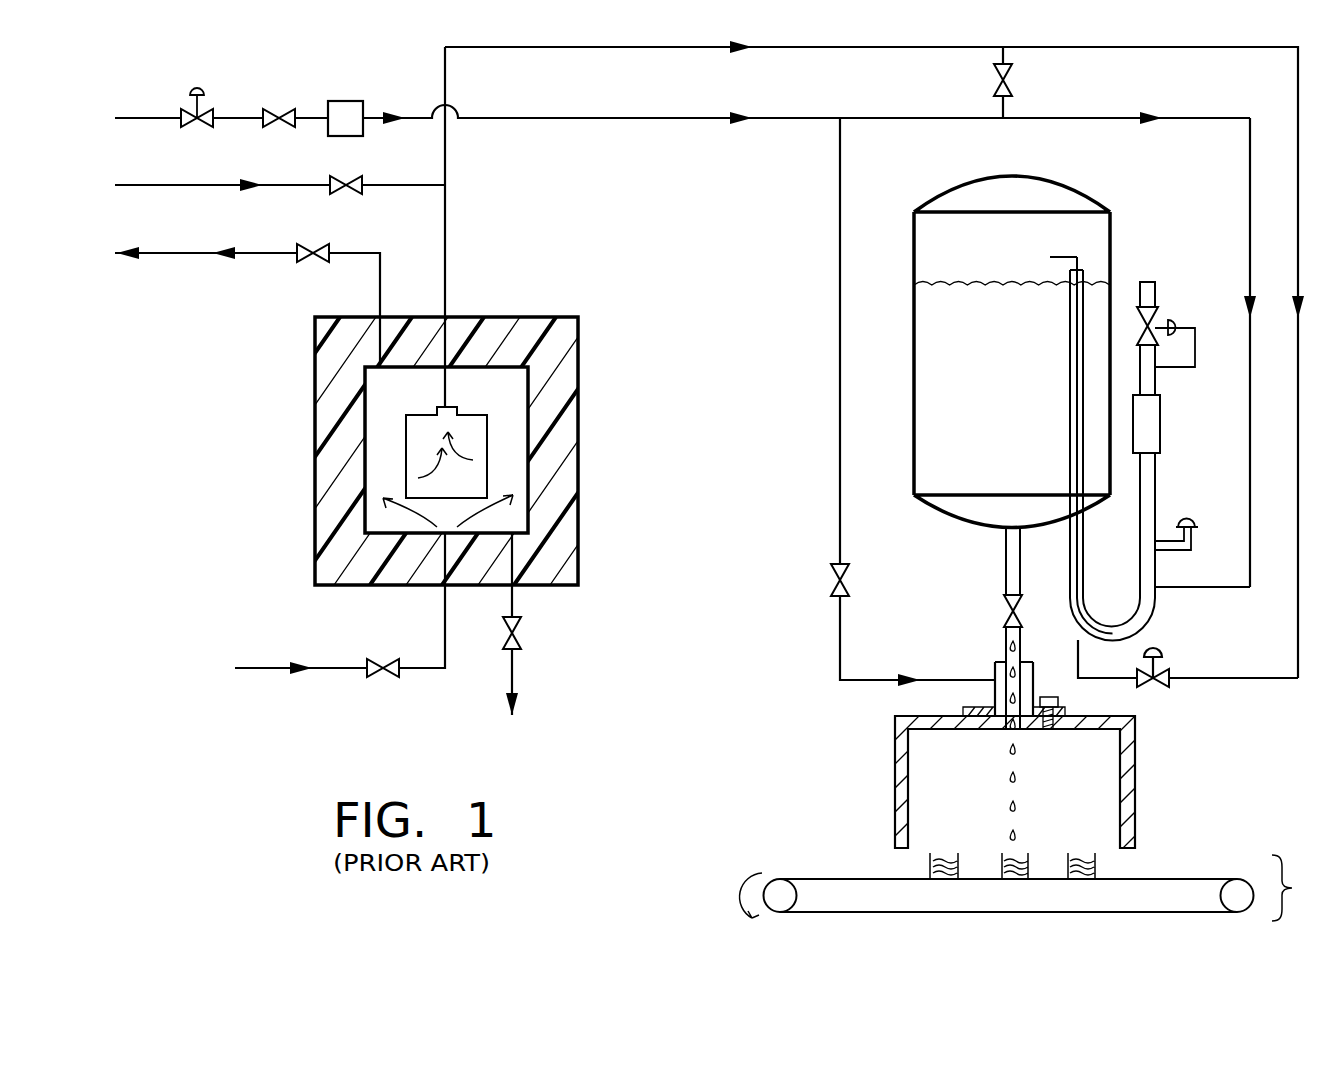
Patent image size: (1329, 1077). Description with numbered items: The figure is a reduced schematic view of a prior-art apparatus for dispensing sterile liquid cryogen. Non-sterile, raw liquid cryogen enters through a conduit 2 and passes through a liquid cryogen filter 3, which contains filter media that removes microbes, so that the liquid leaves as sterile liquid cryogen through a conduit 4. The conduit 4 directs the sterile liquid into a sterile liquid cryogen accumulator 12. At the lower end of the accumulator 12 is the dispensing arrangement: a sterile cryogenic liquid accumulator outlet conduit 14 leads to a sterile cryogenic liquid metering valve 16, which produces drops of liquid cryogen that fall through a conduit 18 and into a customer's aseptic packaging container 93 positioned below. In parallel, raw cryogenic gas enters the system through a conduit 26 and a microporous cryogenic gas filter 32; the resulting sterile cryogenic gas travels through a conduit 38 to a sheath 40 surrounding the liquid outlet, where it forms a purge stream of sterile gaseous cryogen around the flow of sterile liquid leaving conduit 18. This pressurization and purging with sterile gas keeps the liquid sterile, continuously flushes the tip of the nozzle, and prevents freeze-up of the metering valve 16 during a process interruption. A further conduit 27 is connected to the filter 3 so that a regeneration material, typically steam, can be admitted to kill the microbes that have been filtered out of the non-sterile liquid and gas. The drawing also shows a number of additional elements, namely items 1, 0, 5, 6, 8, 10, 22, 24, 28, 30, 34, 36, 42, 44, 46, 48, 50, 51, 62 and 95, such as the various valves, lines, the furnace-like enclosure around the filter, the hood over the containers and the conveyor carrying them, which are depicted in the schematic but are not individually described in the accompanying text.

The apparatus / conveyor assembly 1 is at (1296, 888).
The crucible 0 is at (407, 450).
The conduit 2 is at (255, 668).
The liquid cryogen filter 3 is at (530, 467).
The conduit 4 is at (447, 290).
The outlet valve 5 is at (517, 630).
The gas line 6 is at (891, 48).
The drain valve 8 is at (1172, 676).
The bolt / fastener 10 is at (1077, 652).
The sterile liquid cryogen accumulator 12 is at (962, 185).
The accumulator outlet conduit 14 is at (1004, 562).
The metering valve 16 is at (1004, 600).
The conduit 18 is at (1006, 635).
The hood 22 is at (1135, 748).
The vent line 24 is at (176, 253).
The conduit 26 is at (148, 118).
The conduit 27 is at (177, 185).
The control valve 28 is at (197, 88).
The valve 30 is at (280, 112).
The microporous cryogenic gas filter 32 is at (343, 101).
The gas line 34 is at (570, 118).
The valve 36 is at (1010, 73).
The conduit 38 is at (868, 680).
The sheath 40 is at (1035, 670).
The gas line 42 is at (1063, 118).
The gas line 44 is at (1187, 590).
The valve 46 is at (1142, 280).
The valve actuator 48 is at (1180, 318).
The filter 50 is at (1163, 430).
The valve 51 is at (1195, 540).
The furnace 62 is at (537, 317).
The aseptic packaging container 93 is at (1100, 872).
The conveyor belt 95 is at (1195, 878).